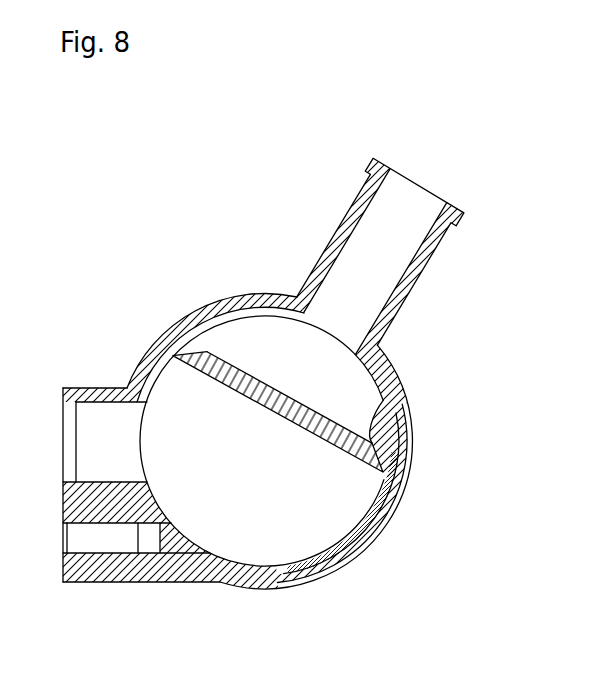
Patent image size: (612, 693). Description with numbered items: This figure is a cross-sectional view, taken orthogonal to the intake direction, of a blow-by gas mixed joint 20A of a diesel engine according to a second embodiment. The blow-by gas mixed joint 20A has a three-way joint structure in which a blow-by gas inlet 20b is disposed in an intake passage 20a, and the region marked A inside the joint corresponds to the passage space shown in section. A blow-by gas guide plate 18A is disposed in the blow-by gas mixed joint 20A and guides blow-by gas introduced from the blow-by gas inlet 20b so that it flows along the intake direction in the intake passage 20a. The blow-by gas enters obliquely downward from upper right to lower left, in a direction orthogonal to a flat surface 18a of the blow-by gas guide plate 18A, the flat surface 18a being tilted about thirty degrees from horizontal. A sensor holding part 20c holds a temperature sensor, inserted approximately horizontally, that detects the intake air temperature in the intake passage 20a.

The blow-by gas mixed joint 20A is at (277, 215).
The chamber A (A1, A2) A is at (263, 350).
The intake passage 20a is at (317, 566).
The blow-by gas inlet 20b is at (433, 273).
The sensor holding part 20c is at (92, 387).
The flat surface 18a is at (283, 393).
The blow-by gas guide plate 18A is at (335, 423).